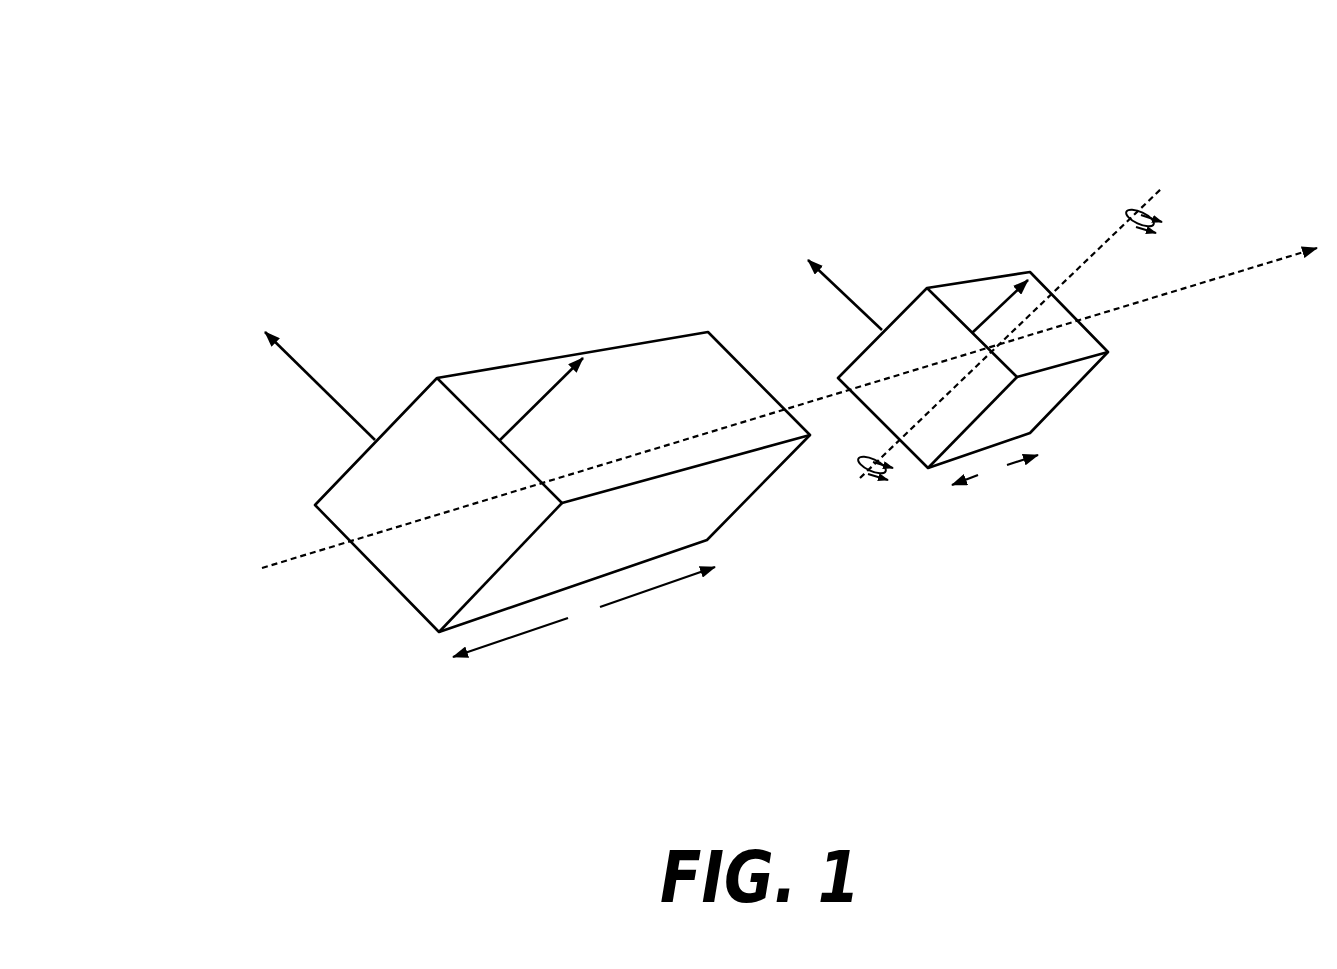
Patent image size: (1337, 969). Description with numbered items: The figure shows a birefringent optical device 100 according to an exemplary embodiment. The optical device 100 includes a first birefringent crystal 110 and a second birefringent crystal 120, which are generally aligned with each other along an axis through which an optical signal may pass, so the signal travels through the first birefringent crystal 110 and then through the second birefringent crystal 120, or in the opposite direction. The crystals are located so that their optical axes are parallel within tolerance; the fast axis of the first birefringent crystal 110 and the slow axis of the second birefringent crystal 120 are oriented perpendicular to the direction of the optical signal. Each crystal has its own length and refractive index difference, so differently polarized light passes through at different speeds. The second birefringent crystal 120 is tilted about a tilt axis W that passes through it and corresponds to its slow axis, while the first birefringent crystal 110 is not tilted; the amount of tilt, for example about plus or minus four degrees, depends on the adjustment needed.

The birefringent optical device 100 is at (328, 71).
The first birefringent crystal 110 is at (399, 593).
The second birefringent crystal 120 is at (1065, 387).
The tilt axis W is at (1112, 242).